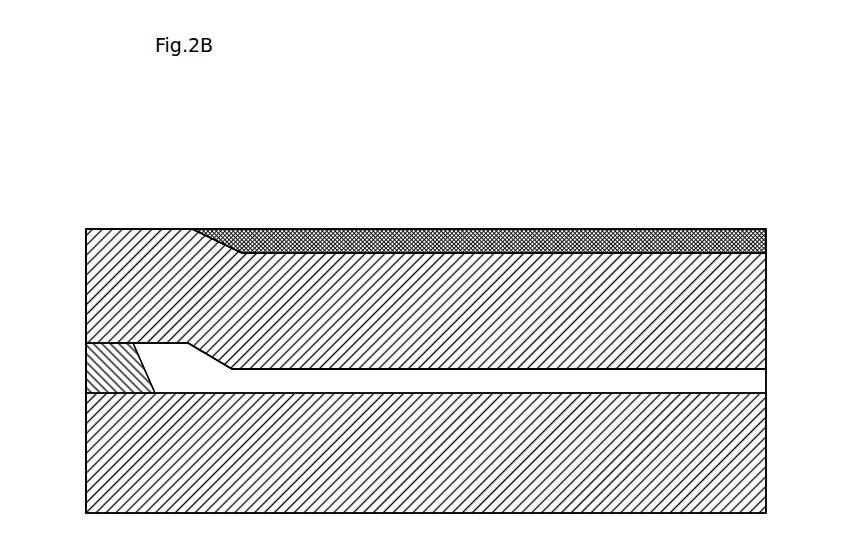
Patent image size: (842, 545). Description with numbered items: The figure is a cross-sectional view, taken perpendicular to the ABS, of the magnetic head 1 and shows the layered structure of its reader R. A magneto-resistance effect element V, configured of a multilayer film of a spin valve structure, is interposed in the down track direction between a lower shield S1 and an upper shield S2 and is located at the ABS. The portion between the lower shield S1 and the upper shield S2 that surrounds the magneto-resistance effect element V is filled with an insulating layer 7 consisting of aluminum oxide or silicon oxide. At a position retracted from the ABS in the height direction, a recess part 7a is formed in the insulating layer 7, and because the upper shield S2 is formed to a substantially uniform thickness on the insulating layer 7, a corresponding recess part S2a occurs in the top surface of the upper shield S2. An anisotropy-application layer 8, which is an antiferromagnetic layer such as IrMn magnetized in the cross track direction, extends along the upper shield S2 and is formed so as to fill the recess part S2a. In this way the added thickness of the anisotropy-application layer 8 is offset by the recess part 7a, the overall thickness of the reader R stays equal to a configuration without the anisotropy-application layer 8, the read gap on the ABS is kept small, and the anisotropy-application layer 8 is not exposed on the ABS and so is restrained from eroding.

The magnetic head 1 is at (367, 165).
The reader R is at (116, 212).
The air bearing surface ABS is at (79, 290).
The anisotropy-application layer 8 is at (500, 231).
The recess part S2a is at (638, 252).
The upper shield S2 is at (766, 295).
The recess part 7a is at (766, 365).
The insulating layer 7 is at (720, 396).
The lower shield S1 is at (766, 480).
The magneto-resistance effect element V is at (84, 406).